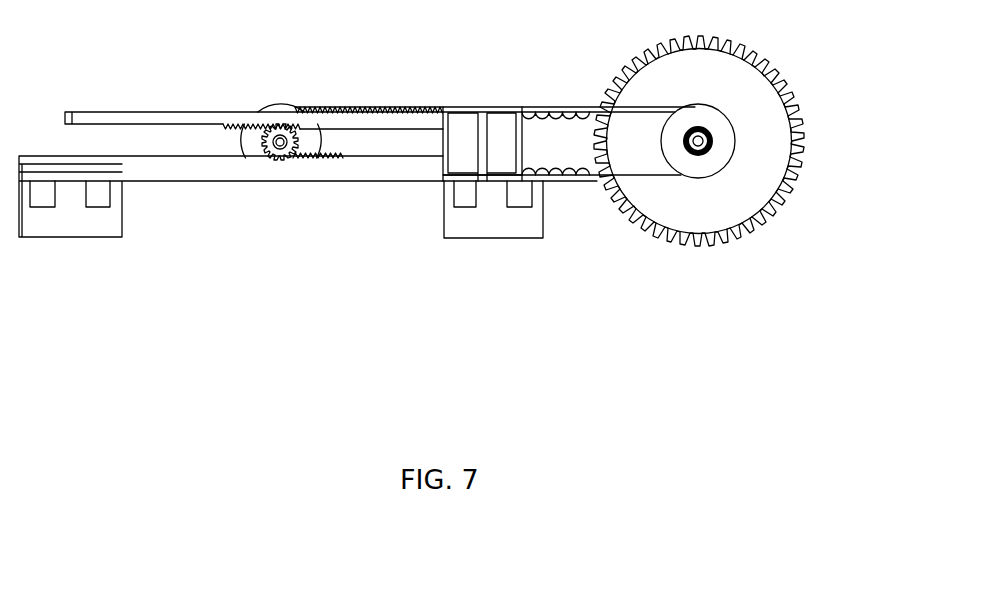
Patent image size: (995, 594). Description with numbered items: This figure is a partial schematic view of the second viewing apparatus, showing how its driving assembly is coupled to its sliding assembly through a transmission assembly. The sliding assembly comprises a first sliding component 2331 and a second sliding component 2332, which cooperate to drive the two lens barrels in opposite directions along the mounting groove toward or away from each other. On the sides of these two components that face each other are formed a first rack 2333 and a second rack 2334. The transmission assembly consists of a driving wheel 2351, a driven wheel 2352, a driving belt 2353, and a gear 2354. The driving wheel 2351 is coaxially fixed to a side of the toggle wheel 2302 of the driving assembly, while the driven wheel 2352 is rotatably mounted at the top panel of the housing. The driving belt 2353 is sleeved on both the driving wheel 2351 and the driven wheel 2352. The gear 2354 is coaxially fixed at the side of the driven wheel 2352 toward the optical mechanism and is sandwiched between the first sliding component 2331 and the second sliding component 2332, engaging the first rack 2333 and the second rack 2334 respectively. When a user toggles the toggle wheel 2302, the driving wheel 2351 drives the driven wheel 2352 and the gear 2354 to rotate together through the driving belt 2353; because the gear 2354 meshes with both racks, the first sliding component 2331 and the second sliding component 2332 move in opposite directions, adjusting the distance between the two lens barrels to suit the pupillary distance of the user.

The first sliding component 2331 is at (166, 111).
The second sliding component 2332 is at (187, 173).
The first rack 2333 is at (236, 125).
The second rack 2334 is at (318, 160).
The driven wheel 2352 is at (281, 105).
The driving belt 2353 is at (477, 107).
The gear 2354 is at (265, 146).
The toggle wheel 2302 is at (738, 66).
The driving wheel 2351 is at (722, 143).